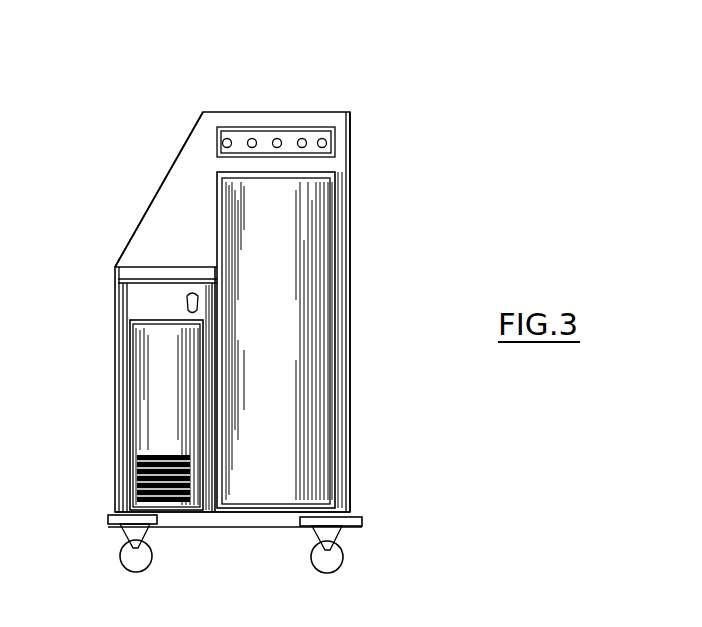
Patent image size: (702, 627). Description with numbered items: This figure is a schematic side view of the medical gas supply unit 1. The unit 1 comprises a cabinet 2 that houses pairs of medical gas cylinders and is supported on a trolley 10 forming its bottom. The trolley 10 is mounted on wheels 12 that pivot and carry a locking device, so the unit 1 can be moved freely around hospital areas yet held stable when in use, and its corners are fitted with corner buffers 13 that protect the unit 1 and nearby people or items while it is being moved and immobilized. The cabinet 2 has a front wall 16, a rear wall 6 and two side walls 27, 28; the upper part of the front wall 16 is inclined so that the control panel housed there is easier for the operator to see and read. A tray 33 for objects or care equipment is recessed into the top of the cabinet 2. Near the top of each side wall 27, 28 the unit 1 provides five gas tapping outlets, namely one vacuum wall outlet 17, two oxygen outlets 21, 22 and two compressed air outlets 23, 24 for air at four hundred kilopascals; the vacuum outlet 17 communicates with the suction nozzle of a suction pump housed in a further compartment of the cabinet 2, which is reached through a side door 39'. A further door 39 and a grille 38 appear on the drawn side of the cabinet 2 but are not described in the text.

The unit 1 is at (405, 117).
The cabinet 2 is at (343, 227).
The rear wall 6 is at (351, 347).
The trolley 10 is at (243, 525).
The wheels 12 is at (131, 566).
The corner buffers 13 is at (112, 518).
The front wall 16 is at (113, 315).
The vacuum wall outlet 17 is at (227, 138).
The oxygen outlet 21 is at (250, 138).
The oxygen outlet 22 is at (264, 133).
The compressed air outlet 23 is at (305, 139).
The compressed air outlet 24 is at (327, 143).
The side wall 27 is at (165, 222).
The side wall 28 is at (280, 352).
The tray 33 is at (300, 112).
The ventilation grille 38 is at (138, 482).
The door 39 is at (276, 341).
The side door 39' is at (128, 397).